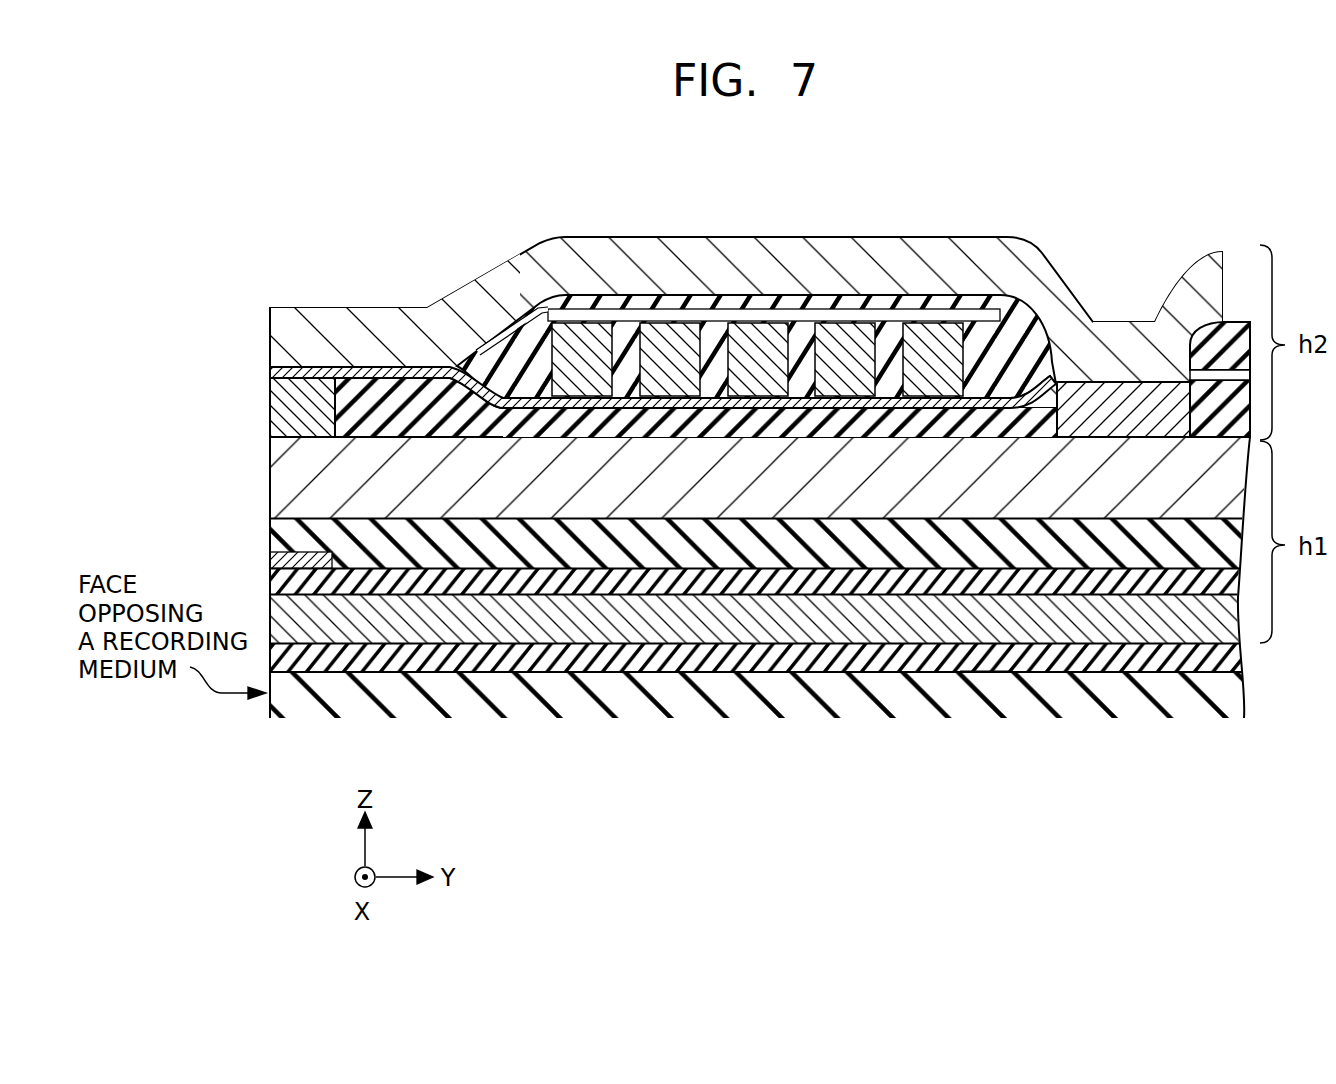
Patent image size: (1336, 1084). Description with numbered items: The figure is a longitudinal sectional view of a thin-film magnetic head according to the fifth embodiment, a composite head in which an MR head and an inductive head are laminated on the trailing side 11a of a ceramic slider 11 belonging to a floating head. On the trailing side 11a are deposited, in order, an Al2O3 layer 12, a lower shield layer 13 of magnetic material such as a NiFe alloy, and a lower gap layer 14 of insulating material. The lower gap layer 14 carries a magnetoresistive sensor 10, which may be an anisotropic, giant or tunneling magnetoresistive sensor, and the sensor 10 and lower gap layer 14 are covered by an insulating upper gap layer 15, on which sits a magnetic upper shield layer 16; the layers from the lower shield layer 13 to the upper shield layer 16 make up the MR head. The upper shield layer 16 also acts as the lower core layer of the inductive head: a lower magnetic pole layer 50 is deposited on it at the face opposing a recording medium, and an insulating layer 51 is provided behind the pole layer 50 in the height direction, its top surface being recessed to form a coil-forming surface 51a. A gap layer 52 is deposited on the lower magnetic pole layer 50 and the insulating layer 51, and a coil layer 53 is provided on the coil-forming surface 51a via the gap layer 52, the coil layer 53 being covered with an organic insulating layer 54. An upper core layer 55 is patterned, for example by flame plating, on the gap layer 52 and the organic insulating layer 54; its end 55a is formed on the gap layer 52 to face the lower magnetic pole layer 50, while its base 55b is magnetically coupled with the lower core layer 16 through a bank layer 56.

The magnetoresistive sensor 10 is at (290, 553).
The slider 11 is at (1067, 683).
The trailing side 11a is at (1003, 660).
The Al2O3 layer 12 is at (910, 657).
The lower shield layer 13 is at (855, 620).
The lower gap layer 14 is at (772, 583).
The upper gap layer 15 is at (687, 540).
The upper shield layer 16 is at (605, 467).
The lower magnetic pole layer 50 is at (300, 404).
The insulating layer 51 is at (413, 403).
The coil-forming surface 51a is at (533, 425).
The gap layer 52 is at (1013, 400).
The coil layer 53 is at (757, 310).
The insulating layer 54 is at (513, 357).
The upper core layer 55 is at (893, 267).
The end 55a is at (347, 335).
The base 55b is at (1123, 347).
The bank layer 56 is at (1130, 405).